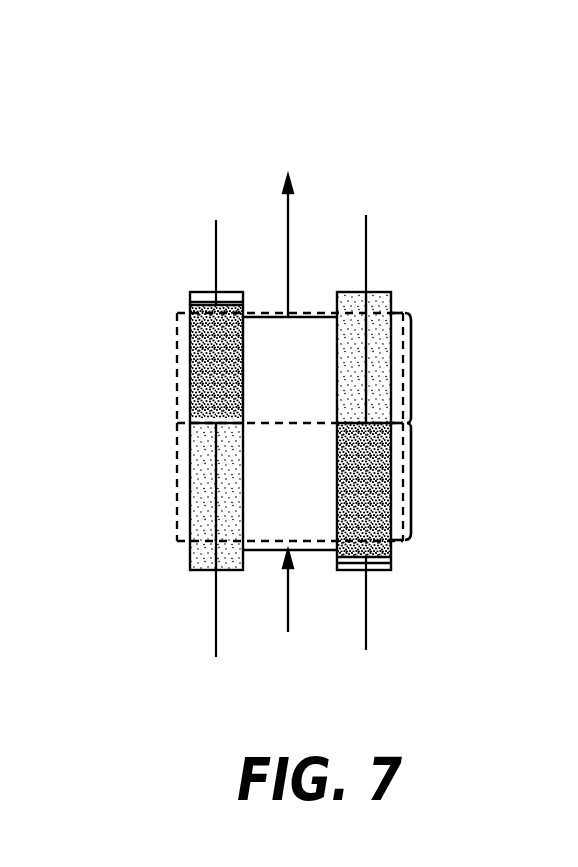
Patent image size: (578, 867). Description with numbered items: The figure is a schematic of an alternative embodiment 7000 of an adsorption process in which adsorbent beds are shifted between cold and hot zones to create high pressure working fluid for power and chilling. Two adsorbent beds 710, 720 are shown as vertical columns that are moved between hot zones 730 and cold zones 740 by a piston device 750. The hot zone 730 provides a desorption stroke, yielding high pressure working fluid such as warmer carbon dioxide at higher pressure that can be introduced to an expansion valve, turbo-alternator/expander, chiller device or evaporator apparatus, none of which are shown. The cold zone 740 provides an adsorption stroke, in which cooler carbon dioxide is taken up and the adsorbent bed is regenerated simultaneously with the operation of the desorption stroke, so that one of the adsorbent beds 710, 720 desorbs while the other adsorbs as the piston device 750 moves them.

The alternative embodiment 7000 is at (301, 84).
The adsorbent bed 710 is at (203, 352).
The adsorbent bed 720 is at (382, 502).
The hot zone 730 is at (411, 367).
The cold zone 740 is at (411, 478).
The piston device 750 is at (216, 632).